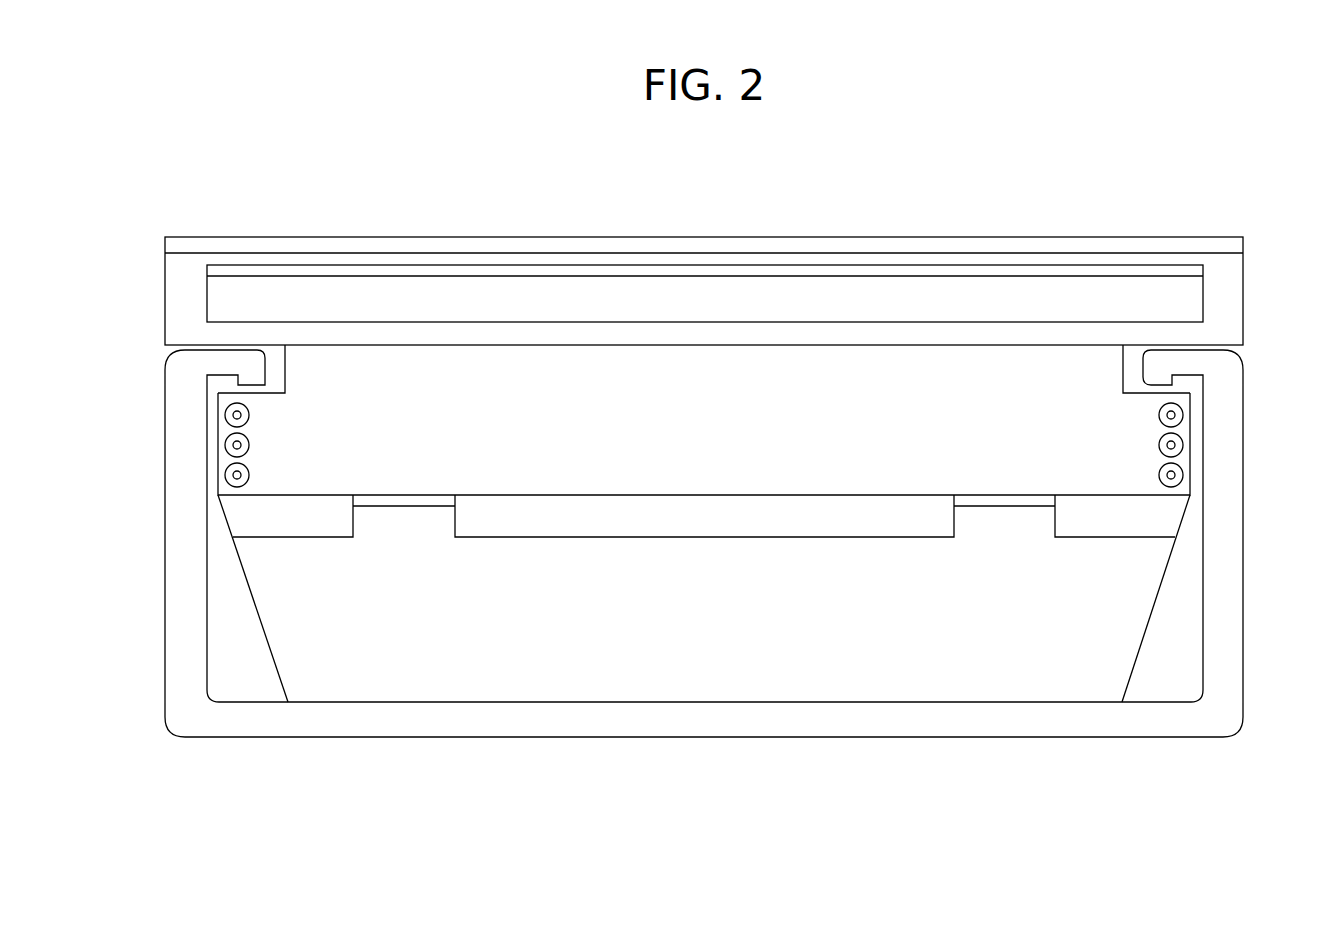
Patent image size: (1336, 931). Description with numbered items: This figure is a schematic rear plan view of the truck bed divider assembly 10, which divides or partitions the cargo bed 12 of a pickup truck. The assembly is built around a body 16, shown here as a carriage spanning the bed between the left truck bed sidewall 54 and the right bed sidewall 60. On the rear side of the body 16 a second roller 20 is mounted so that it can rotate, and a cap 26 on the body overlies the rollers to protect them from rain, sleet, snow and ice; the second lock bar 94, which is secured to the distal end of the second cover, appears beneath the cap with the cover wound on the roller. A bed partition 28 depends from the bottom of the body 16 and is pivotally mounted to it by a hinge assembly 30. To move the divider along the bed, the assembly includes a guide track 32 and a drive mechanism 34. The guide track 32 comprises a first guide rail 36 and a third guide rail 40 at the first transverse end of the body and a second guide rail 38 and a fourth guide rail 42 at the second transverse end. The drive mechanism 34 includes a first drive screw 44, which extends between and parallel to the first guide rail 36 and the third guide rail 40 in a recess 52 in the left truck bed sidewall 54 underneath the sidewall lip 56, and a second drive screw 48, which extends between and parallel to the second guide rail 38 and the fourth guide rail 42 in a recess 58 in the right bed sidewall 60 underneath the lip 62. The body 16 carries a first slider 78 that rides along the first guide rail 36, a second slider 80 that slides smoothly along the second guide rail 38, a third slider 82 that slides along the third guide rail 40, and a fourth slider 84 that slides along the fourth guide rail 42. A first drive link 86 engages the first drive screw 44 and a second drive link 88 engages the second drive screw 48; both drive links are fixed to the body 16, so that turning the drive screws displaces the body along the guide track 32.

The truck bed divider assembly 10 is at (1080, 197).
The cargo bed 12 is at (1065, 702).
The body 16 is at (590, 425).
The second roller 20 is at (648, 293).
The cap 26 is at (508, 237).
The bed partition 28 is at (633, 675).
The hinge assembly 30 is at (730, 523).
The guide track 32 is at (168, 478).
The drive mechanism 34 is at (277, 431).
The first guide rail 36 is at (225, 412).
The second guide rail 38 is at (1185, 410).
The third guide rail 40 is at (225, 475).
The fourth guide rail 42 is at (1187, 477).
The first drive screw 44 is at (227, 445).
The second drive screw 48 is at (1183, 445).
The recess 52 is at (218, 489).
The left truck bed sidewall 54 is at (177, 577).
The sidewall lip 56 is at (229, 362).
The recess 58 is at (1183, 463).
The right bed sidewall 60 is at (1225, 553).
The lip 62 is at (1163, 362).
The first slider 78 is at (223, 407).
The second slider 80 is at (1193, 412).
The third slider 82 is at (237, 488).
The fourth slider 84 is at (1187, 482).
The first drive link 86 is at (250, 450).
The second drive link 88 is at (1158, 447).
The second lock bar 94 is at (900, 264).